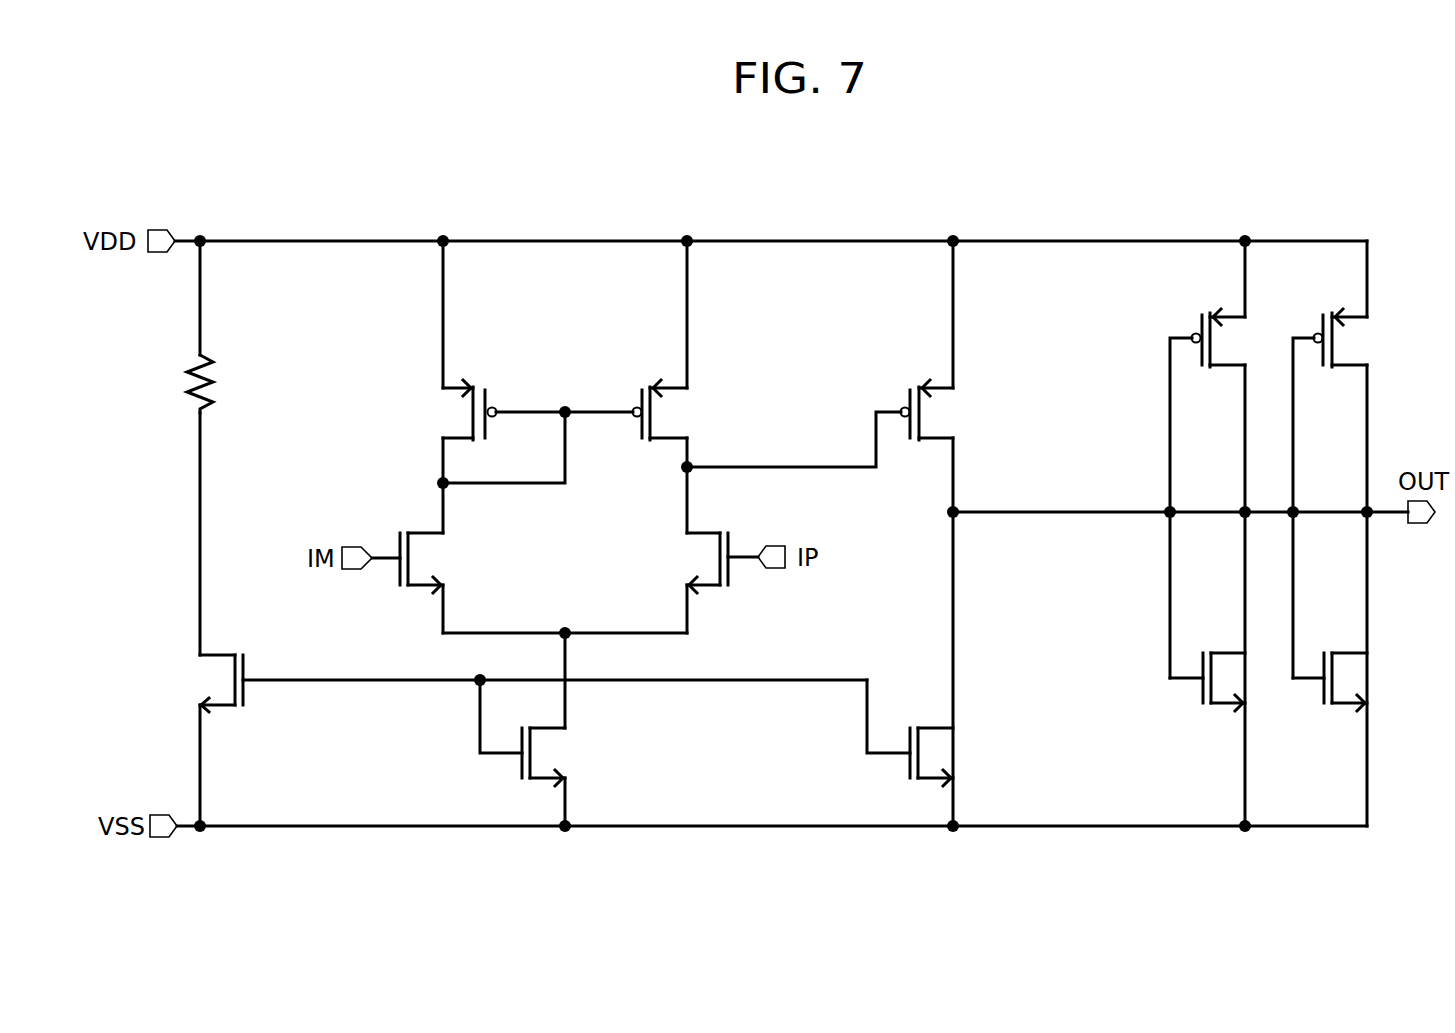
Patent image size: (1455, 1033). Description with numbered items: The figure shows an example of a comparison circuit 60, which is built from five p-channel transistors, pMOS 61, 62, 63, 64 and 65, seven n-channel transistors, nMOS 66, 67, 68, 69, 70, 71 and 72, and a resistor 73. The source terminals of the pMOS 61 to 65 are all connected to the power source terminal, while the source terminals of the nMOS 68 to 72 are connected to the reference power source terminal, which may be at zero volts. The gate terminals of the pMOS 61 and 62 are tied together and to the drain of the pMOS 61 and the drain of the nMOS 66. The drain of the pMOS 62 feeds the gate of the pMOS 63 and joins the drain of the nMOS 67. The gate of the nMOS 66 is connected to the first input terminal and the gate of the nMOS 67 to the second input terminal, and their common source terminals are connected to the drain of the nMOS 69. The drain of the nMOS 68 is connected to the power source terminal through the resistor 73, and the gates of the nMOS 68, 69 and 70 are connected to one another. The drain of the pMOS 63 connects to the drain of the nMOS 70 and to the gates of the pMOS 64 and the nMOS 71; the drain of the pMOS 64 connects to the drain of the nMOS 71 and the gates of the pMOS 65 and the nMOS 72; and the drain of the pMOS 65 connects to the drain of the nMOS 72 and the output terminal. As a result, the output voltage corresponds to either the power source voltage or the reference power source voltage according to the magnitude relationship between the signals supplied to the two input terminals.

The comparison circuit 60 is at (1373, 162).
The pMOS 61 is at (462, 384).
The pMOS 62 is at (663, 384).
The pMOS 63 is at (928, 384).
The pMOS 64 is at (1200, 328).
The pMOS 65 is at (1359, 321).
The nMOS 66 is at (413, 530).
The nMOS 67 is at (712, 590).
The nMOS 68 is at (218, 650).
The nMOS 69 is at (547, 726).
The nMOS 70 is at (936, 726).
The nMOS 71 is at (1216, 709).
The nMOS 72 is at (1352, 710).
The resistor 73 is at (214, 376).